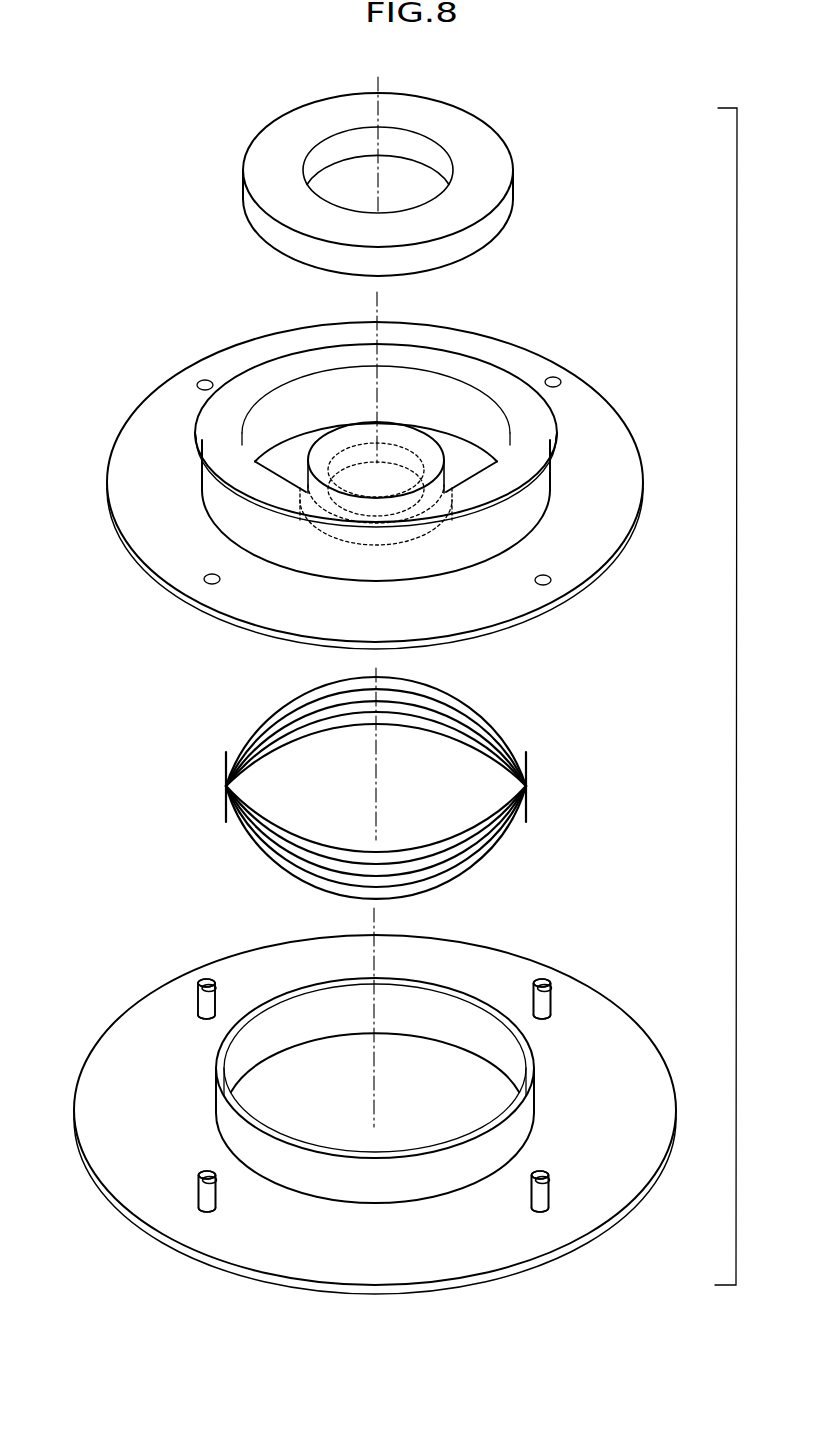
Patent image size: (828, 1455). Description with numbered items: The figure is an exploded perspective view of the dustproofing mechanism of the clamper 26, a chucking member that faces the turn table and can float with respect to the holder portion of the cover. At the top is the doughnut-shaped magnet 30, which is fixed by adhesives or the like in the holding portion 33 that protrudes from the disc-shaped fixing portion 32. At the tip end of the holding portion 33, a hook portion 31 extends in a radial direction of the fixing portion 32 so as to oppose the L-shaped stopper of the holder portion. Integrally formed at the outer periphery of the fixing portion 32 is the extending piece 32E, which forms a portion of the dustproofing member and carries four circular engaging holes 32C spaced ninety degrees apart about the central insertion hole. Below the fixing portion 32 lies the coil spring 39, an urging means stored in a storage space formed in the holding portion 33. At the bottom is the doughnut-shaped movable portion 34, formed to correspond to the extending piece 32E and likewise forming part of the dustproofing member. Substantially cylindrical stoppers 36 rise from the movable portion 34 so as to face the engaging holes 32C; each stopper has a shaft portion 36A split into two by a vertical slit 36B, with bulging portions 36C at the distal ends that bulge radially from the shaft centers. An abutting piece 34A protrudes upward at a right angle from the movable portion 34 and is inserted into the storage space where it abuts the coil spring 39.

The clamper 26 is at (640, 330).
The magnet 30 is at (513, 178).
The hook portion 31 is at (553, 438).
The fixing portion 32 is at (613, 401).
The engaging holes 32C is at (205, 385).
The extending piece 32E is at (640, 500).
The holding portion 33 is at (535, 497).
The movable portion 34 is at (657, 1077).
The abutting piece 34A is at (528, 1083).
The stoppers 36 is at (555, 1000).
The shaft portions 36A is at (540, 1018).
The slit 36B is at (555, 1008).
The bulging portions 36C is at (540, 981).
The coil spring 39 is at (528, 805).